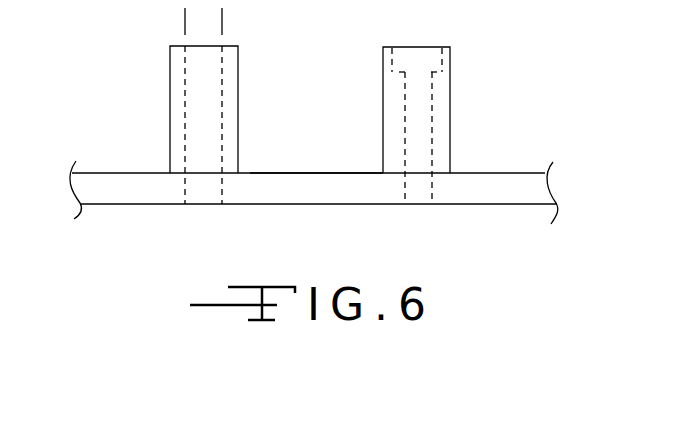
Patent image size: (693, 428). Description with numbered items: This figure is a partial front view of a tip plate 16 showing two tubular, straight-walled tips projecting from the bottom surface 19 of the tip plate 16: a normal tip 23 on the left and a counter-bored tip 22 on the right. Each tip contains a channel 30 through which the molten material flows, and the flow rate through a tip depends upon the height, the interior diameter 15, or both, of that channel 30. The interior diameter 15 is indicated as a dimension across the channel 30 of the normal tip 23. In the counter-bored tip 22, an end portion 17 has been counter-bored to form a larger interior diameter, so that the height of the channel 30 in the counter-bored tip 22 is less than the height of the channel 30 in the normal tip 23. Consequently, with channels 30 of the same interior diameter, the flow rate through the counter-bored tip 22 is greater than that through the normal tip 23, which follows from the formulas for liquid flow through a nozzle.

The interior diameter 15 is at (272, 22).
The tip plate 16 is at (468, 197).
The end portion 17 is at (420, 47).
The bottom surface 19 is at (313, 173).
The counter-bored tip 22 is at (440, 100).
The normal tip 23 is at (170, 118).
The channel 30 is at (198, 102).